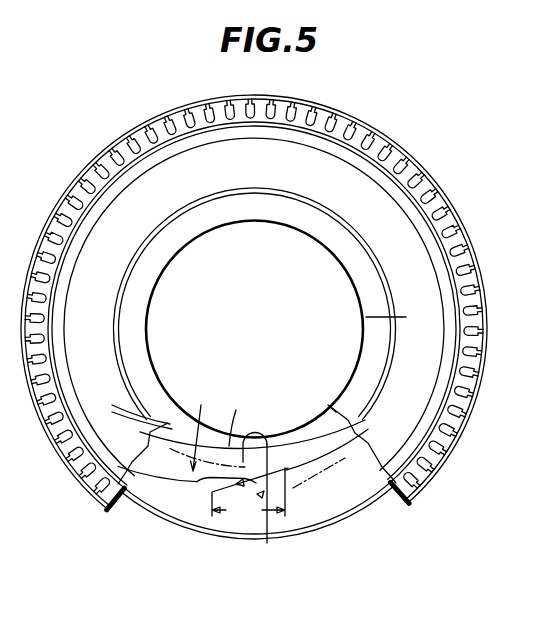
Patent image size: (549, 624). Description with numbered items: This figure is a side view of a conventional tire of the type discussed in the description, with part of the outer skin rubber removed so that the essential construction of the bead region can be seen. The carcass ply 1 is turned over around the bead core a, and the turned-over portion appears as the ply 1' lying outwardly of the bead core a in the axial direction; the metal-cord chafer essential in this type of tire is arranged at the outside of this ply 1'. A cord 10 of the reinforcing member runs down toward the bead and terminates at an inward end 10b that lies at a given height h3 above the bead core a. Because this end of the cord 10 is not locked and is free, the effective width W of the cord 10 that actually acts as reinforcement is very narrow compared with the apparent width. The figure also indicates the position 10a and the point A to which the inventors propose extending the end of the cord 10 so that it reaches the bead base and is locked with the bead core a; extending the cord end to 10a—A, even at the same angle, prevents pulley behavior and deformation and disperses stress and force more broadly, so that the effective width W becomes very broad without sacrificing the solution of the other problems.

The cord 10 is at (195, 493).
The cord end 10a is at (215, 492).
The inward end 10b is at (288, 468).
The carcass ply 1 is at (249, 517).
The ply 1' is at (266, 420).
The point A is at (332, 408).
The height h3 is at (206, 425).
The bead core a is at (234, 416).
The effective width W is at (248, 496).